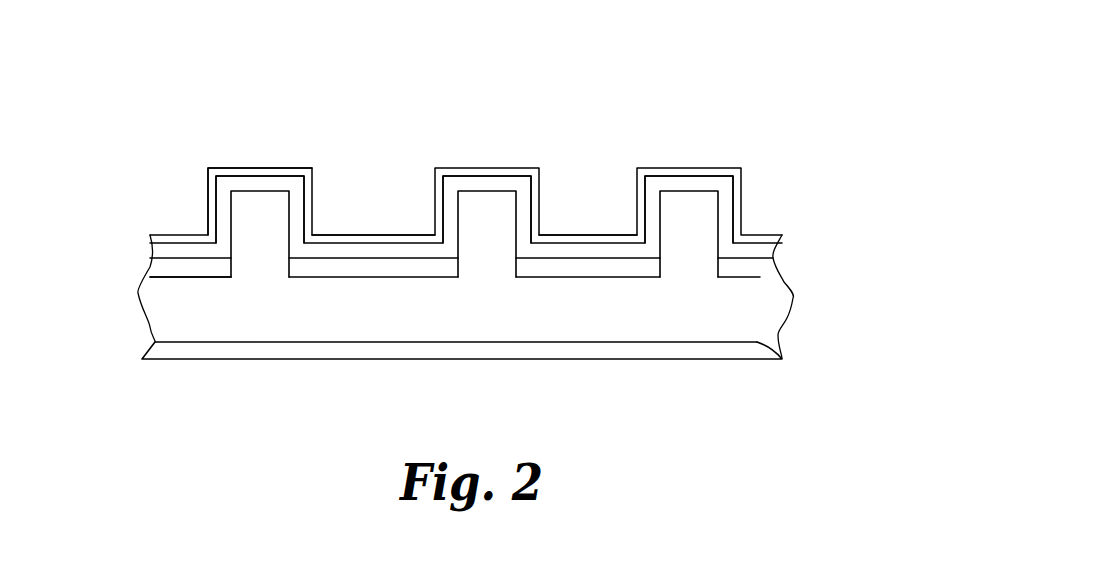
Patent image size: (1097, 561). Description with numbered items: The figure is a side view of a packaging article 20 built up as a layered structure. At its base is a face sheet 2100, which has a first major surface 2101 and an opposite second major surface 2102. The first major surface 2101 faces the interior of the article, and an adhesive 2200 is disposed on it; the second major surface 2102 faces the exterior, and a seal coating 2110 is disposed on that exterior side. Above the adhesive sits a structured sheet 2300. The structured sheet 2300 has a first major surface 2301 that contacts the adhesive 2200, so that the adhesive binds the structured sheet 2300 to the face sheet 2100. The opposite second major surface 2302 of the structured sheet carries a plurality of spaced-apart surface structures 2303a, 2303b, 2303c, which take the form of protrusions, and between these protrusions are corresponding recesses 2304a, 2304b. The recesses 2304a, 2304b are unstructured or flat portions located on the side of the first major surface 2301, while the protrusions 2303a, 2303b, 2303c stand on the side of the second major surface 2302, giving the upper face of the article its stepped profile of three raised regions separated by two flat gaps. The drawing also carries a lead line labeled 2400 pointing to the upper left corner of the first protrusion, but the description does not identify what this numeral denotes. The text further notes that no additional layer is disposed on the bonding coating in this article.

The packaging article 20 is at (757, 57).
The face sheet 2100 is at (763, 302).
The first major surface 2101 is at (760, 277).
The second major surface 2102 is at (783, 358).
The seal coating 2110 is at (213, 347).
The adhesive 2200 is at (680, 257).
The structured sheet 2300 is at (156, 265).
The first major surface 2301 is at (155, 280).
The second major surface 2302 is at (157, 243).
The surface structure 2303a is at (266, 167).
The surface structure 2303b is at (493, 167).
The surface structure 2303c is at (697, 167).
The recess 2304a is at (377, 184).
The recess 2304b is at (595, 184).
The encapsulation layer 2400 is at (223, 168).